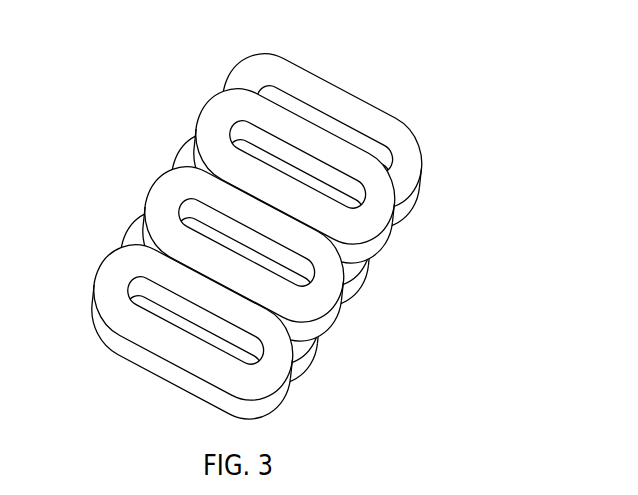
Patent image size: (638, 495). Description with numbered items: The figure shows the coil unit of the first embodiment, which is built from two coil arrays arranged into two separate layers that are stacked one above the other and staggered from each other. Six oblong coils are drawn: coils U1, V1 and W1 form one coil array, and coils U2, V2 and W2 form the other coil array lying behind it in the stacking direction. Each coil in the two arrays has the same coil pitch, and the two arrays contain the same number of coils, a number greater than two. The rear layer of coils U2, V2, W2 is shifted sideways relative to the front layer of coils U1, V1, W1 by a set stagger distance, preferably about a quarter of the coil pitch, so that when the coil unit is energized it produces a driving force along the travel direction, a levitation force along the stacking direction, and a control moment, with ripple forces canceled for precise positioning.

The U-phase first coil U1 is at (192, 332).
The U-phase second coil U2 is at (219, 297).
The V-phase first coil V1 is at (243, 254).
The V-phase second coil V2 is at (270, 219).
The W-phase first coil W1 is at (294, 176).
The W-phase second coil W2 is at (321, 141).